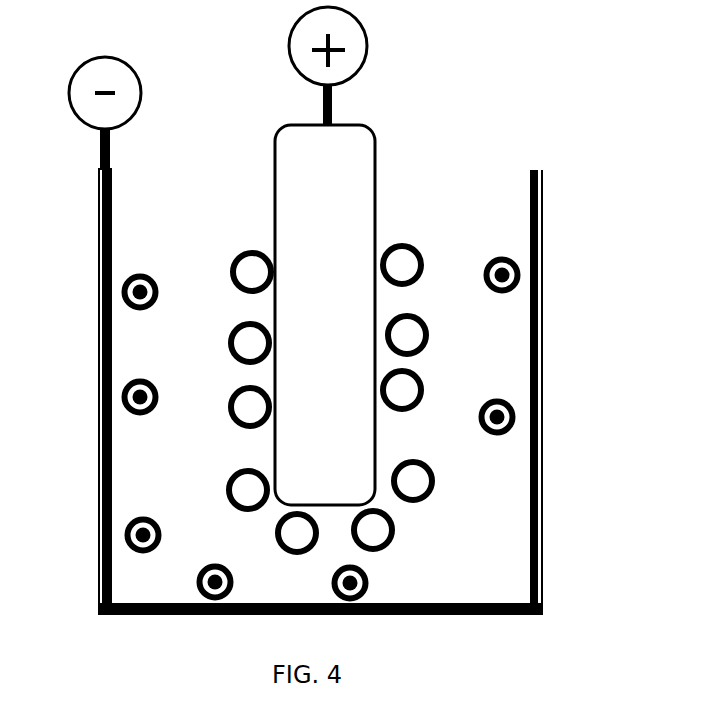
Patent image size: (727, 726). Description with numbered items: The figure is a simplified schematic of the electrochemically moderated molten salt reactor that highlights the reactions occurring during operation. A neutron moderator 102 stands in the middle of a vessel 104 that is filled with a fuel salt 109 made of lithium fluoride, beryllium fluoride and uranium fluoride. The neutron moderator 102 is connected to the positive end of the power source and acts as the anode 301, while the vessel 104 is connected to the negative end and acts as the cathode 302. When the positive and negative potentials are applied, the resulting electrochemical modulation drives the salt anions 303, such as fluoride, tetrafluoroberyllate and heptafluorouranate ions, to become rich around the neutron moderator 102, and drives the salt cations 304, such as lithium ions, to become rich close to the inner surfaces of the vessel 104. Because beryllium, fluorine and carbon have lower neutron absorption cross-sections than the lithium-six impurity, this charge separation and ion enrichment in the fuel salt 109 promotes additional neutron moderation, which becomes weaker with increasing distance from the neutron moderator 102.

The neutron moderator 102 is at (325, 315).
The vessel 104 is at (98, 428).
The fuel salt 109 is at (321, 418).
The anode 301 is at (378, 44).
The cathode 302 is at (120, 57).
The salt anions 303 is at (246, 240).
The salt cations 304 is at (505, 300).